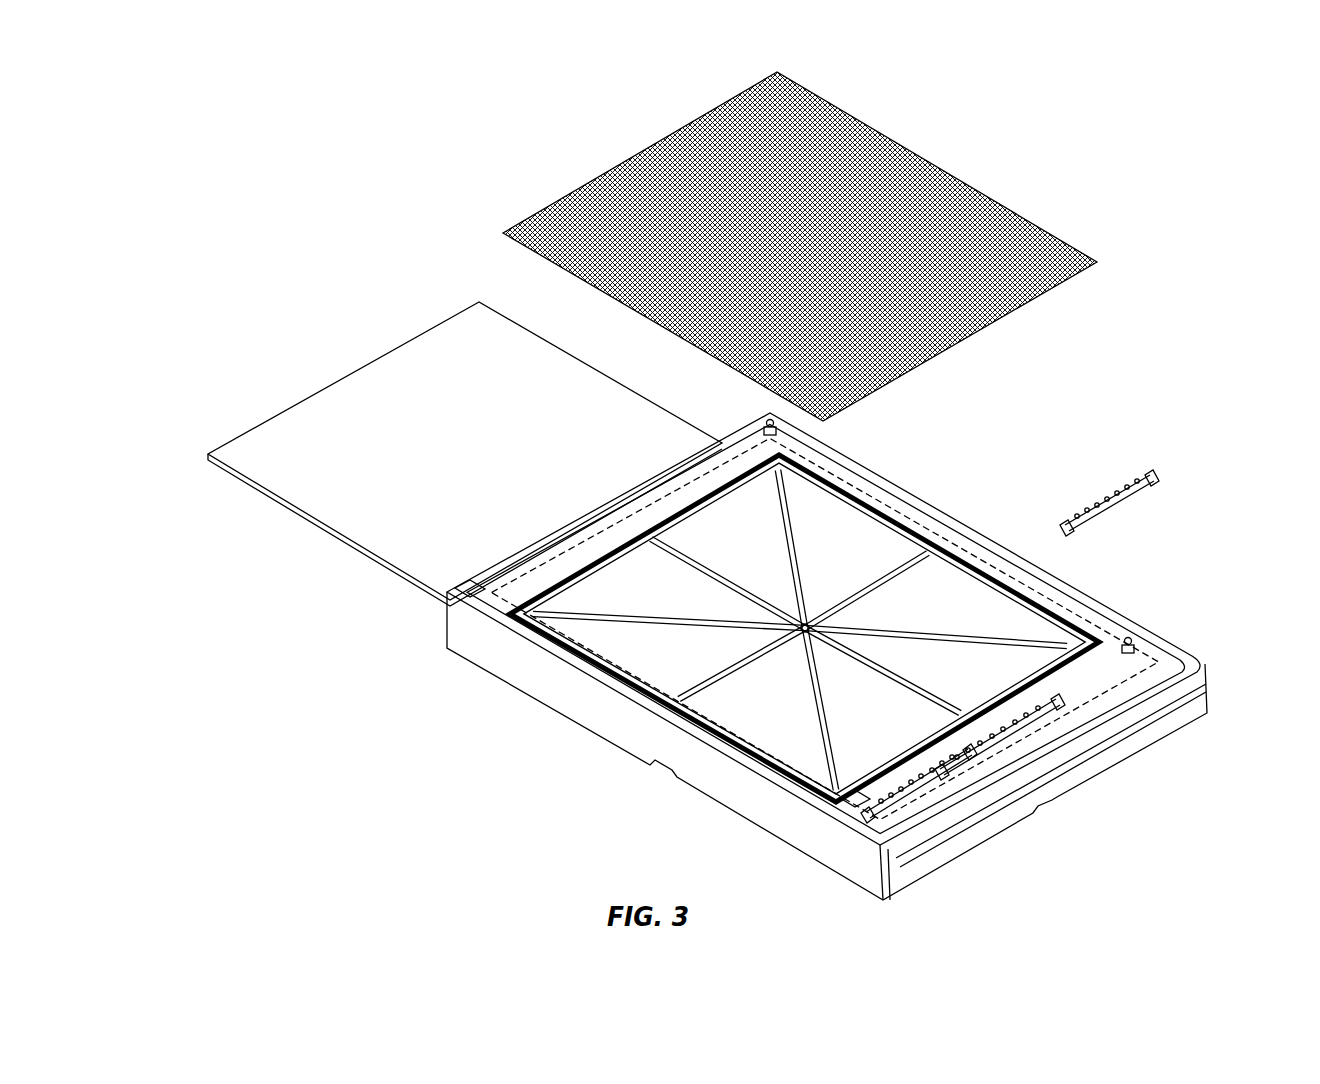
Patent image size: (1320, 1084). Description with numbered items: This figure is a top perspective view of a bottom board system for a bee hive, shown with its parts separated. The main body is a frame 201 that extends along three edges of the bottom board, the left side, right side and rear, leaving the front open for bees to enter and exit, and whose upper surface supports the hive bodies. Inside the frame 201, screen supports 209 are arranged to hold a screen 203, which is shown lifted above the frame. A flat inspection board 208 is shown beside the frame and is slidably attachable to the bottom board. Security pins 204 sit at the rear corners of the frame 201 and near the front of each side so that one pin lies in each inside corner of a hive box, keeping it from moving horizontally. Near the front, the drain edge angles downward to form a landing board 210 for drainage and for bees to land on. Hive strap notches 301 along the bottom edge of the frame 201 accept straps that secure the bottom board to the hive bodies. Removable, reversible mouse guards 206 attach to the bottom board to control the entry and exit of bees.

The frame 201 is at (940, 512).
The screen 203 is at (1045, 228).
The security pin 204 is at (776, 423).
The mouse guard/entrance reducer 206 is at (1152, 482).
The inspection board 208 is at (258, 447).
The screen support 209 is at (997, 648).
The landing board 210 is at (1120, 697).
The hive strap notch 301 is at (1048, 805).